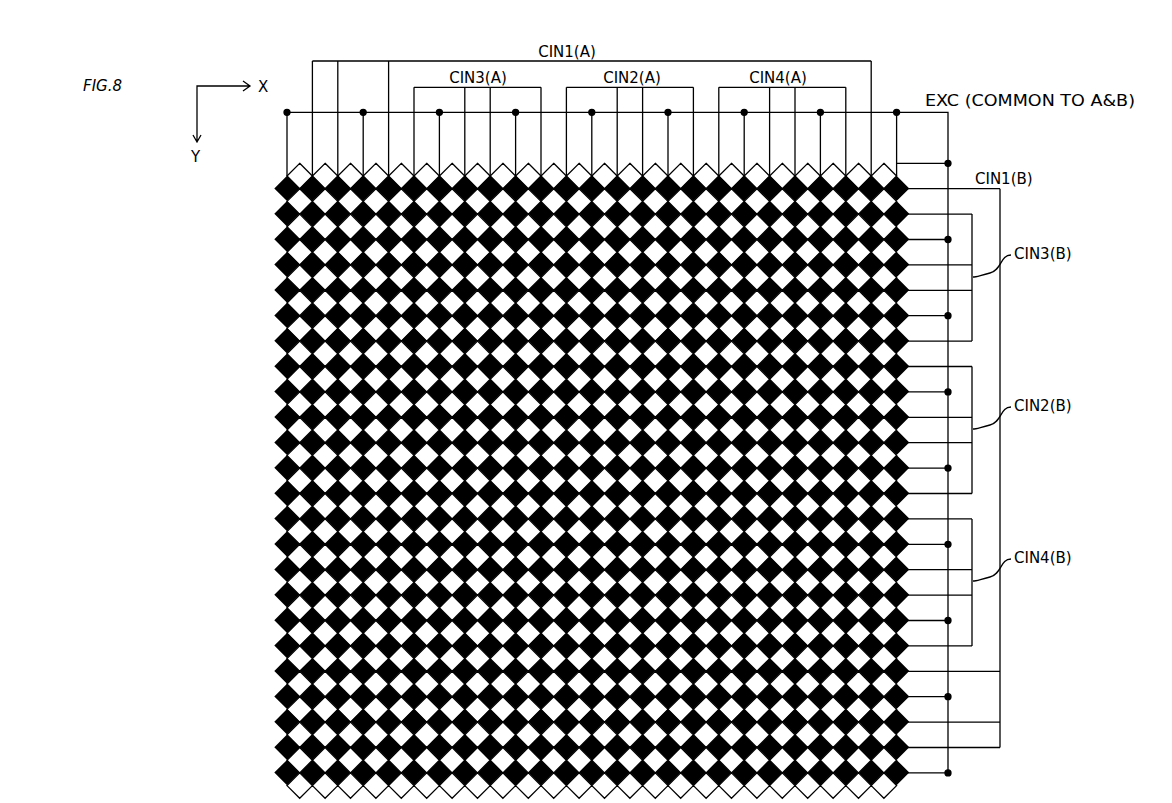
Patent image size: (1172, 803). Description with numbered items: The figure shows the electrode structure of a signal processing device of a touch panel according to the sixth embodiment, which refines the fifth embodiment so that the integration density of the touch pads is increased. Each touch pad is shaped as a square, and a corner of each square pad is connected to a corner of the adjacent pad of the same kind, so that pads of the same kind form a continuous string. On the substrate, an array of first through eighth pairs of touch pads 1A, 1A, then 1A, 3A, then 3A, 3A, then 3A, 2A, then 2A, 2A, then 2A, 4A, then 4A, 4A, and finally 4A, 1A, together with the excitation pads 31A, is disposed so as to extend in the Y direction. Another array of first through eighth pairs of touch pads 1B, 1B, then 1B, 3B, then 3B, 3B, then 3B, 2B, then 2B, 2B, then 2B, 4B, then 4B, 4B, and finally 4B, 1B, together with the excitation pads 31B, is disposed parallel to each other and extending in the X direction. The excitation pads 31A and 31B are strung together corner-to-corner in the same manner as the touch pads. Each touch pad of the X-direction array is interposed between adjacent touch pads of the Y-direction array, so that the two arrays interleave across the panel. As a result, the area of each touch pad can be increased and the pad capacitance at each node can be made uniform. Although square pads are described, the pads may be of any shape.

The touch pad 1A is at (307, 168).
The touch pad 2A is at (561, 168).
The touch pad 3A is at (409, 168).
The touch pad 4A is at (714, 168).
The excitation pad 31A is at (275, 176).
The touch pad 1B is at (903, 173).
The touch pad 2B is at (903, 350).
The touch pad 3B is at (903, 198).
The touch pad 4B is at (903, 503).
The excitation pad 31B is at (951, 768).